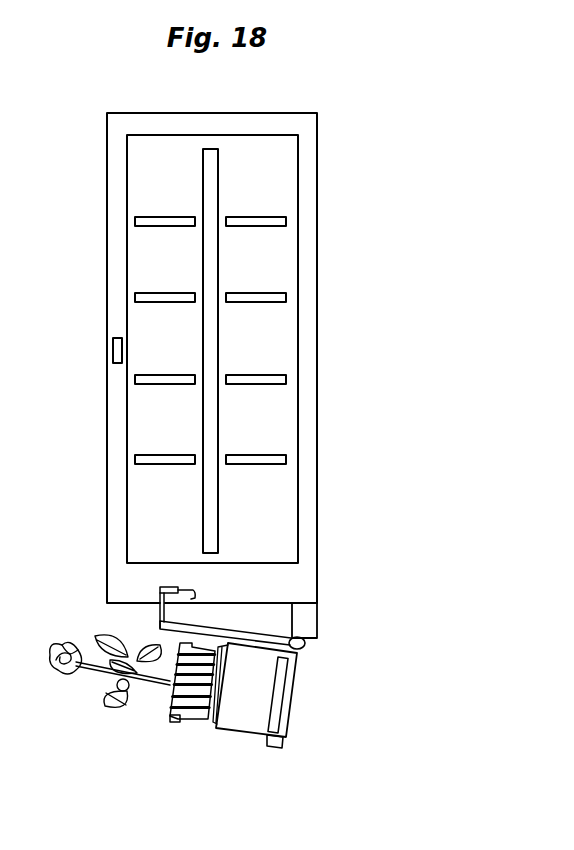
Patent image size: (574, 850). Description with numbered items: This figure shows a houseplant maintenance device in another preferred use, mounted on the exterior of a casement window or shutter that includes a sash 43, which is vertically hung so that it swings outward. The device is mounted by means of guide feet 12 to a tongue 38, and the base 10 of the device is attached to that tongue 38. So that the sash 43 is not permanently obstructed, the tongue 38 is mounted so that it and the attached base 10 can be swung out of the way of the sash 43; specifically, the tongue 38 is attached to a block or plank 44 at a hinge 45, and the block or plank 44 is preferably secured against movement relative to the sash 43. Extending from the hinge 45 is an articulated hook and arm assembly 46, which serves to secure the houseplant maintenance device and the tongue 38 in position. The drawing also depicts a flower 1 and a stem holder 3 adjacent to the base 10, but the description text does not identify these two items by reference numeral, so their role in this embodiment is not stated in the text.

The flower 1 is at (92, 685).
The stem holder 3 is at (177, 721).
The base 10 is at (243, 720).
The guide feet 12 is at (279, 731).
The tongue 38 is at (284, 737).
The sash 43 is at (118, 156).
The block or plank 44 is at (309, 623).
The hinge 45 is at (303, 645).
The articulated hook and arm assembly 46 is at (205, 623).